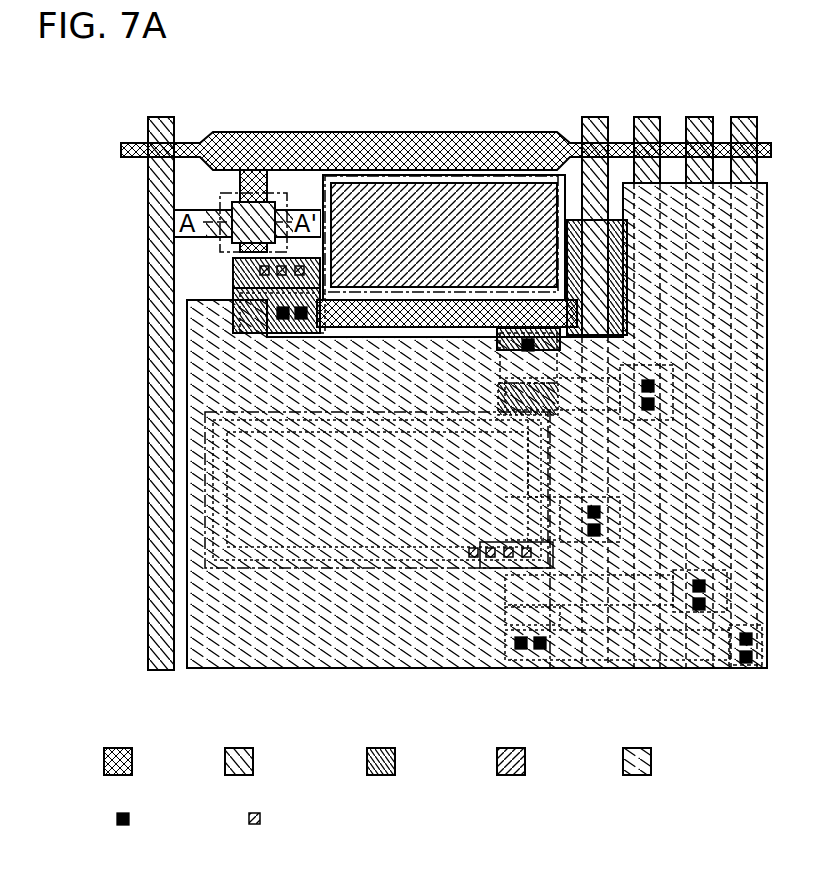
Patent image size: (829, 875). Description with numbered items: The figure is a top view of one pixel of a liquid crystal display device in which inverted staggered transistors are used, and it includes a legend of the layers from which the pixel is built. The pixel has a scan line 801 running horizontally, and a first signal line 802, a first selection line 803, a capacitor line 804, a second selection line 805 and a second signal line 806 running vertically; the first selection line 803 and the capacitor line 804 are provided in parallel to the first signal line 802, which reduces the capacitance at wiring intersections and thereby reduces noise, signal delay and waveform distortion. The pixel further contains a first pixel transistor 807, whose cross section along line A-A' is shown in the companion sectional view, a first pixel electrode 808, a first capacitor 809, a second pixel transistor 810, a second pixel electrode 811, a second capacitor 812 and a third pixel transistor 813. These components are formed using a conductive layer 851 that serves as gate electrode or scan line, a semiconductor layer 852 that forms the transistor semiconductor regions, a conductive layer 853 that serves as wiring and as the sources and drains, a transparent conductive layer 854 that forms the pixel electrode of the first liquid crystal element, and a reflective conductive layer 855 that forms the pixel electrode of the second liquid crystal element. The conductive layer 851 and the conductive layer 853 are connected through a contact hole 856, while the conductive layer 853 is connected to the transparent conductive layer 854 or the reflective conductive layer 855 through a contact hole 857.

The scan line 801 is at (228, 132).
The first signal line 802 is at (159, 116).
The first selection line 803 is at (650, 116).
The capacitor line 804 is at (592, 116).
The second selection line 805 is at (703, 116).
The second signal line 806 is at (748, 116).
The first pixel transistor 807 is at (262, 192).
The first pixel electrode 808 is at (445, 175).
The first capacitor 809 is at (615, 217).
The second pixel transistor 810 is at (555, 370).
The second pixel electrode 811 is at (400, 672).
The second capacitor 812 is at (280, 568).
The third pixel transistor 813 is at (500, 655).
The conductive layer 851 is at (133, 762).
The semiconductor layer 852 is at (258, 762).
The conductive layer 853 is at (396, 762).
The transparent conductive layer 854 is at (526, 762).
The reflective conductive layer 855 is at (652, 762).
The contact hole 856 is at (130, 820).
The contact hole 857 is at (261, 820).